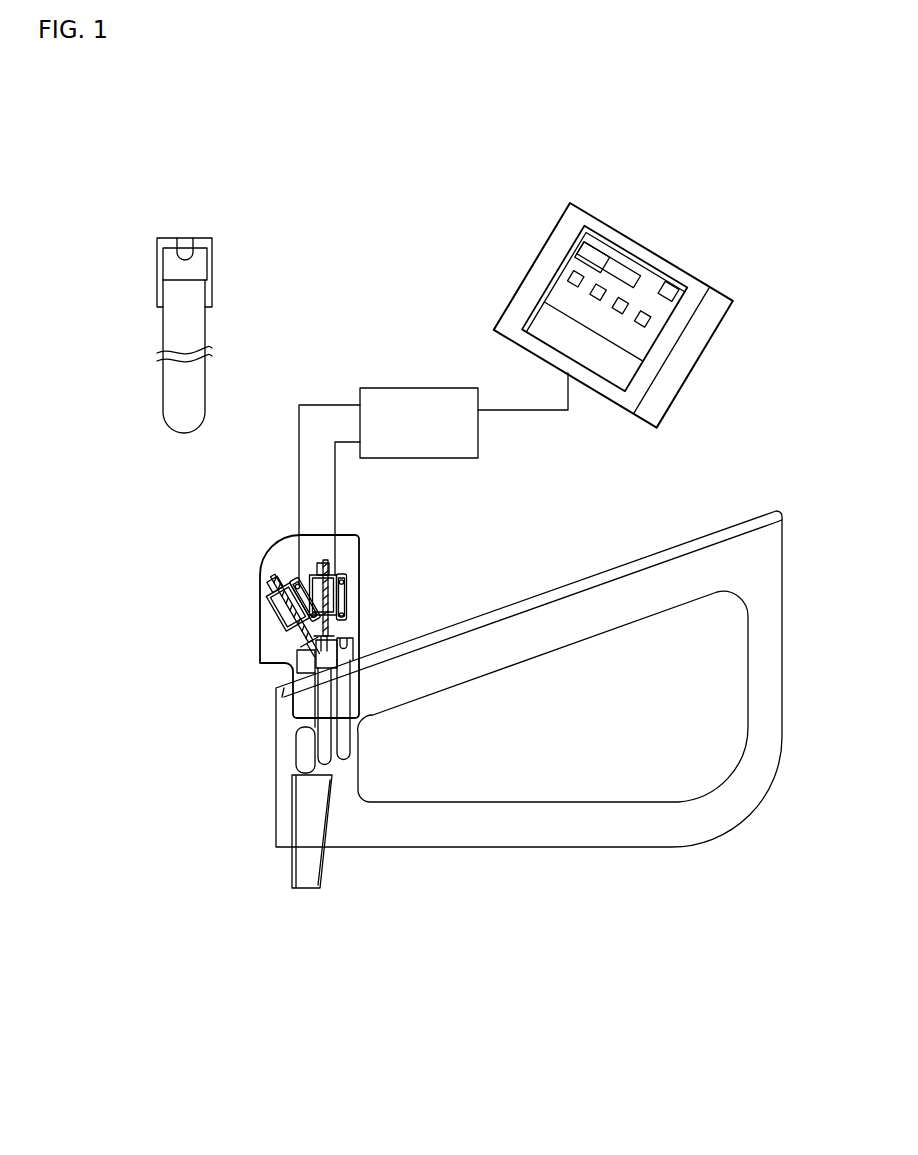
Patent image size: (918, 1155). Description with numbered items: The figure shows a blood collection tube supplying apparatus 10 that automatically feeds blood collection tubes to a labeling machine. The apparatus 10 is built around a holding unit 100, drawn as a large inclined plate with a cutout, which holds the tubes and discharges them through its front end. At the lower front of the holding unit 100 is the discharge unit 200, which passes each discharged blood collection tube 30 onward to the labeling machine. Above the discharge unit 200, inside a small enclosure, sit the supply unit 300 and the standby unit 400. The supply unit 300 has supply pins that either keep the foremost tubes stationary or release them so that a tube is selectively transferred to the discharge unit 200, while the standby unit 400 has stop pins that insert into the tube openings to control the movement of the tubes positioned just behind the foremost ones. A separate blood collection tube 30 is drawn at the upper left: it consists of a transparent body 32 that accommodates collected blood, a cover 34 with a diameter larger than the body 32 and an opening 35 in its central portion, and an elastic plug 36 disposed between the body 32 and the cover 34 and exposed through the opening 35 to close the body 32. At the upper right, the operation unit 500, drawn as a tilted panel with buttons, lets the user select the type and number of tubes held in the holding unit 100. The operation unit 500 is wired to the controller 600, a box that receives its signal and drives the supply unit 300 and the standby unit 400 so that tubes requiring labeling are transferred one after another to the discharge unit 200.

The apparatus 10 is at (490, 195).
The blood collection tube 30 is at (247, 237).
The body 32 is at (205, 333).
The cover 34 is at (167, 242).
The opening 35 is at (188, 245).
The plug 36 is at (202, 265).
The holding unit 100 is at (610, 868).
The discharge unit 200 is at (330, 866).
The supply unit 300 is at (275, 580).
The standby unit 400 is at (353, 590).
The operation unit 500 is at (670, 232).
The controller 600 is at (403, 383).